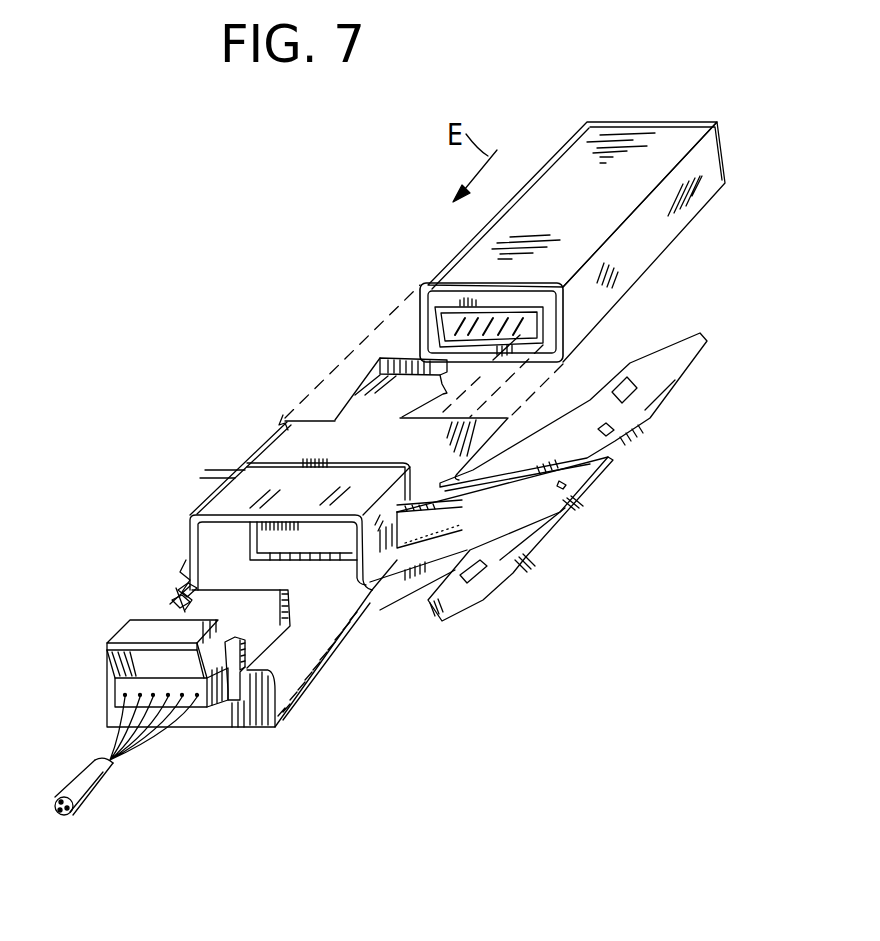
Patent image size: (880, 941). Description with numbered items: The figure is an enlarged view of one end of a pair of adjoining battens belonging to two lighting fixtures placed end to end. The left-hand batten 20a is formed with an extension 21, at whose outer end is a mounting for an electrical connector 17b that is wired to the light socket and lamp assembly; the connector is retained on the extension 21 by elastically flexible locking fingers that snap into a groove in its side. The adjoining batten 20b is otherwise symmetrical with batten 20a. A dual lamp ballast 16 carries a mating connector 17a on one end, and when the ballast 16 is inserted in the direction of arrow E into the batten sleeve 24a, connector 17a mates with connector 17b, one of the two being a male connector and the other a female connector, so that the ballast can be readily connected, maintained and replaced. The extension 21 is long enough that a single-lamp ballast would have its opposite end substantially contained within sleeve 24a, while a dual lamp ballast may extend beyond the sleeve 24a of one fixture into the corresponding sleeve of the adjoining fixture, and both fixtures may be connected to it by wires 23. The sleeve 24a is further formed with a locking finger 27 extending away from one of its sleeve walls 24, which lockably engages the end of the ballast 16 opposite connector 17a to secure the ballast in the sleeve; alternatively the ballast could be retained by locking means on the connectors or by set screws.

The ballast 16 is at (591, 213).
The connector 17a is at (440, 310).
The electrical connector 17b is at (182, 600).
The left hand batten 20a is at (565, 512).
The batten 20b is at (632, 405).
The extension 21 is at (320, 637).
The wires 23 is at (95, 773).
The sleeve wall 24 is at (324, 504).
The batten sleeve 24a is at (283, 527).
The locking finger 27 is at (362, 390).